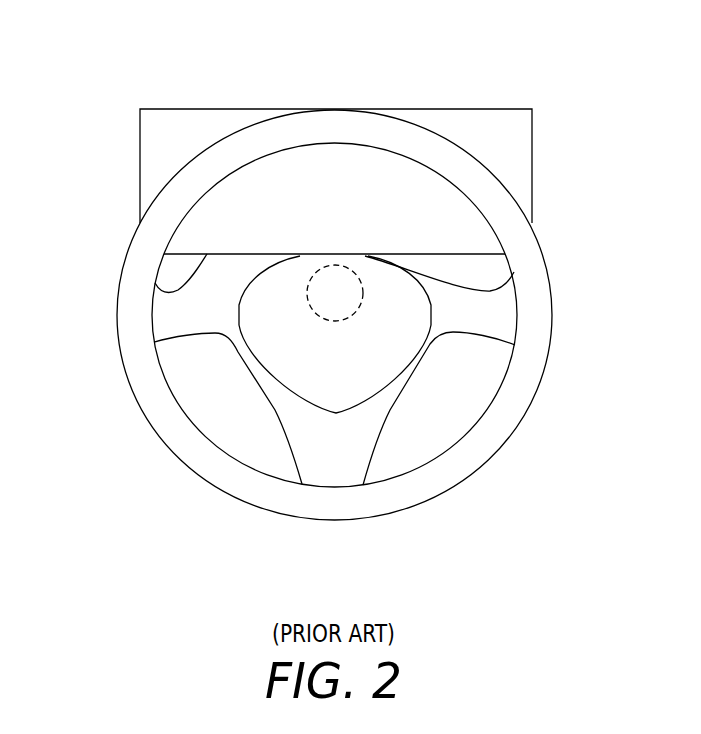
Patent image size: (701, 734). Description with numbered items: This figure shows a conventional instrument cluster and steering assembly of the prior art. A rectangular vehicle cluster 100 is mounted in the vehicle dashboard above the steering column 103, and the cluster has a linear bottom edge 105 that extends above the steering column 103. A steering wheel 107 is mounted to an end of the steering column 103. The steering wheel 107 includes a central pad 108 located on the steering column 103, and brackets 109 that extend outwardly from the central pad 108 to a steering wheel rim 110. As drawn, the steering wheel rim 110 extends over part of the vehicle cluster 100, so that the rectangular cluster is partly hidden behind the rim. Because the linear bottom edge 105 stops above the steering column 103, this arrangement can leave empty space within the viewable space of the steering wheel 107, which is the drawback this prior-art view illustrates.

The vehicle cluster 100 is at (532, 168).
The steering column 103 is at (365, 253).
The bottom edge 105 is at (207, 254).
The steering wheel 107 is at (584, 282).
The central pad 108 is at (410, 372).
The brackets 109 is at (208, 307).
The steering wheel rim 110 is at (415, 491).